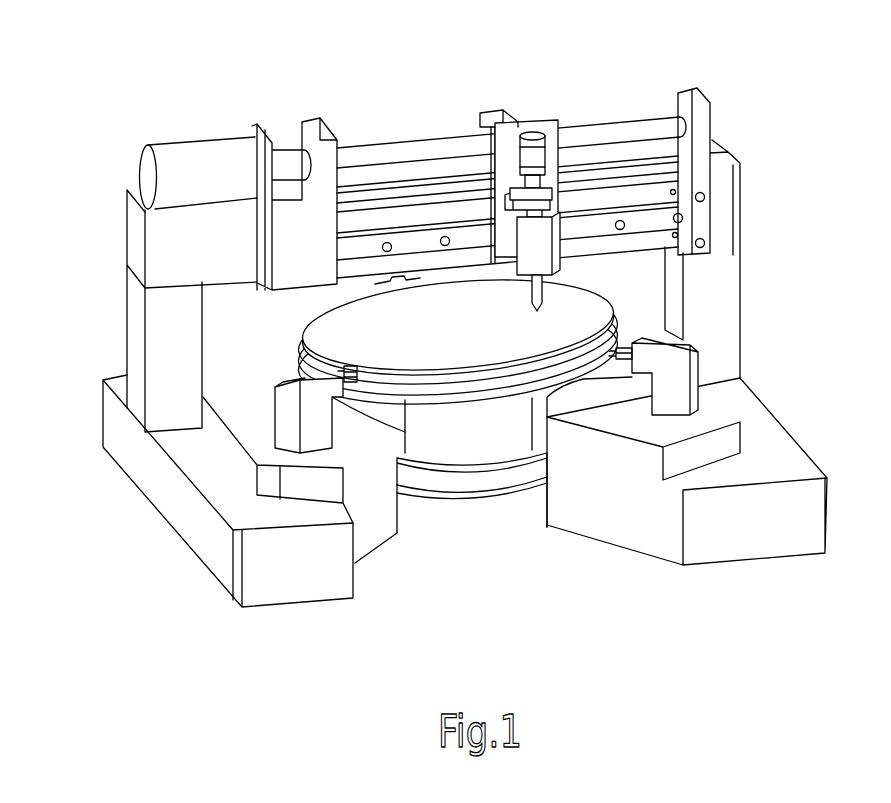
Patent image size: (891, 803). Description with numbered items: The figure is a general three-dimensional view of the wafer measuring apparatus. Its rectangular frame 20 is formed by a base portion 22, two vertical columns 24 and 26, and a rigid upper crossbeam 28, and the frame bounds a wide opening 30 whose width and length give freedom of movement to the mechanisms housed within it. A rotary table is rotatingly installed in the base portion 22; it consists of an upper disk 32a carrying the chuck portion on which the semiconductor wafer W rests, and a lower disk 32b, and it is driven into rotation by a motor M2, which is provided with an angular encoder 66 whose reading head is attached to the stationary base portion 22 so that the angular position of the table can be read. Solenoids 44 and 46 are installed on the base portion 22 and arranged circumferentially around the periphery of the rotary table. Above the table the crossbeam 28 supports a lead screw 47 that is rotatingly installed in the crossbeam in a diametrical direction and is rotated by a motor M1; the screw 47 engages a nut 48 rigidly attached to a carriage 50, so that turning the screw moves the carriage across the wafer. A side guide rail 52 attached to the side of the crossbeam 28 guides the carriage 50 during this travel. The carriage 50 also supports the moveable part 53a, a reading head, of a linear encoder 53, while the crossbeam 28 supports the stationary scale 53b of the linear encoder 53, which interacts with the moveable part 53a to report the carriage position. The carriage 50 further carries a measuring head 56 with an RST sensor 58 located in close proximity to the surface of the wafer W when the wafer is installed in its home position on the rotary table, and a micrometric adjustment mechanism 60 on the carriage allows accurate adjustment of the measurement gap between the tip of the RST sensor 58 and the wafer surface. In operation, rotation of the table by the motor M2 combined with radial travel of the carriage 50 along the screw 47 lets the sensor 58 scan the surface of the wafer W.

The rectangular frame 20 is at (128, 128).
The motor M1 is at (197, 136).
The rigid upper crossbeam 28 is at (207, 235).
The vertical column 24 is at (133, 305).
The vertical column 26 is at (742, 258).
The base portion 22 is at (117, 430).
The lead screw 47 is at (643, 130).
The nut 48 is at (580, 147).
The carriage 50 is at (503, 142).
The side guide rail 52 is at (653, 222).
The linear encoder 53 is at (492, 180).
The moveable part of linear encoder 53a is at (648, 163).
The scale of linear encoder 53b is at (658, 205).
The measuring head 56 is at (578, 277).
The RST sensor 58 is at (546, 290).
The micrometric adjustment mechanism 60 is at (542, 153).
The semiconductor wafer W is at (310, 302).
The wide opening 30 is at (299, 338).
The angular encoder 66 is at (451, 492).
The motor M2 is at (490, 480).
The upper disk 32a is at (597, 370).
The lower disk 32b is at (353, 430).
The solenoid 44 is at (697, 383).
The solenoid 46 is at (290, 430).